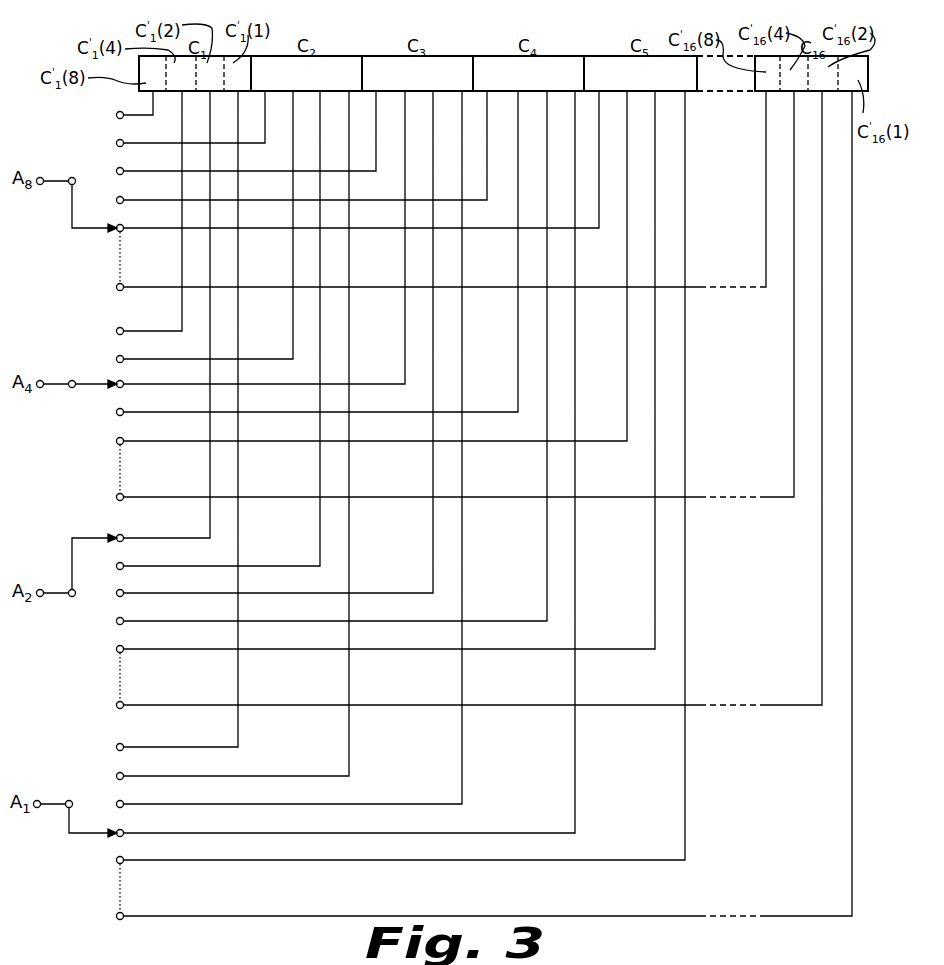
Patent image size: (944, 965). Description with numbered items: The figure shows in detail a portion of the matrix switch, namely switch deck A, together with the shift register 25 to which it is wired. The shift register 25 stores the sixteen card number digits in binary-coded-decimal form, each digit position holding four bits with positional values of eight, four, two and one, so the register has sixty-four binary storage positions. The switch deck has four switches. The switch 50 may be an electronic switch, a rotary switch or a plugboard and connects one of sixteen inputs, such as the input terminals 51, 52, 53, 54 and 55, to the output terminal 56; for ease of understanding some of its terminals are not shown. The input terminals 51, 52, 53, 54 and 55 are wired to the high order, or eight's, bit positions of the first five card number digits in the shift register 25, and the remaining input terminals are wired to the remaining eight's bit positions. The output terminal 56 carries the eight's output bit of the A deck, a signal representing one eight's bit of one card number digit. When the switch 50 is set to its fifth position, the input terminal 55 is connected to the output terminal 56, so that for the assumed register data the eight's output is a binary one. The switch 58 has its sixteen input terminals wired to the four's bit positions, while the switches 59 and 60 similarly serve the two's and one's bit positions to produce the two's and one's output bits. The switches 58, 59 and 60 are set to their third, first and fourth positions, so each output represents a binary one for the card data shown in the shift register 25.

The shift register 25 is at (748, 97).
The switch 50 is at (58, 176).
The input terminal 51 is at (124, 119).
The input terminal 52 is at (124, 147).
The input terminal 53 is at (124, 175).
The input terminal 54 is at (124, 204).
The input terminal 55 is at (124, 232).
The output terminal 56 is at (42, 188).
The switch 58 is at (62, 392).
The switch 59 is at (68, 560).
The switch 60 is at (56, 799).